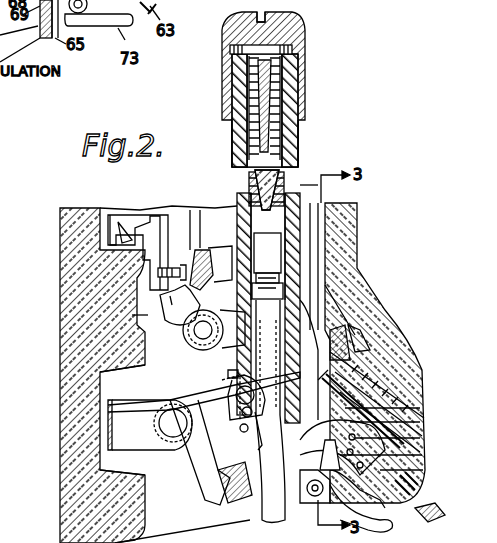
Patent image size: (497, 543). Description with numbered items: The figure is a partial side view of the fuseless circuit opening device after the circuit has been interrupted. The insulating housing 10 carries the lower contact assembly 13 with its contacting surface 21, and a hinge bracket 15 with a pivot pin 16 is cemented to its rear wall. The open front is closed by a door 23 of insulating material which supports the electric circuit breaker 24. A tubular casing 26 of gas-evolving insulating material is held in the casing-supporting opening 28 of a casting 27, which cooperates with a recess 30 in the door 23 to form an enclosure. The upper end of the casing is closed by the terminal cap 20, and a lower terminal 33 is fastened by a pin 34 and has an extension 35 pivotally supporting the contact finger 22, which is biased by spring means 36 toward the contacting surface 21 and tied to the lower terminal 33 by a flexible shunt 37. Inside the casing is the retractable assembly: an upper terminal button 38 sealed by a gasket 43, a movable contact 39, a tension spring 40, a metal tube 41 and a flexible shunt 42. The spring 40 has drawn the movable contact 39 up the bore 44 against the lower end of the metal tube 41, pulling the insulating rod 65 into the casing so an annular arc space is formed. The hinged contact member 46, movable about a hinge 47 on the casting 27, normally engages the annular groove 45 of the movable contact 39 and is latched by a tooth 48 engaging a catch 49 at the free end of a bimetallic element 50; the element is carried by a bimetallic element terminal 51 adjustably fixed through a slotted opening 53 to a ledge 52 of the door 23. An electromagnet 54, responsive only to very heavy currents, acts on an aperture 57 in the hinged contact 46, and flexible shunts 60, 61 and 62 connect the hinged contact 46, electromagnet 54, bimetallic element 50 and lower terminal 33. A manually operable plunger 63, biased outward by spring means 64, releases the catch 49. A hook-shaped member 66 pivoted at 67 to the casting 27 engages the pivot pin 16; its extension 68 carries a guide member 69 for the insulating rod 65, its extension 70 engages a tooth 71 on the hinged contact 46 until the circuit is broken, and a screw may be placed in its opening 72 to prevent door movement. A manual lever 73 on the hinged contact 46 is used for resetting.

The housing 10 is at (60, 243).
The lower contact assembly 13 is at (154, 306).
The hinge bracket 15 is at (160, 445).
The pivot pin 16 is at (178, 432).
The terminal cap 20 is at (305, 64).
The contacting surface 21 is at (178, 214).
The contact finger 22 is at (195, 310).
The door 23 is at (360, 220).
The electric circuit breaker 24 is at (309, 177).
The tubular casing 26 is at (300, 145).
The casting 27 is at (338, 344).
The casing-supporting opening 28 is at (324, 355).
The recess 30 is at (400, 395).
The lower terminal 33 is at (322, 292).
The pin 34 is at (228, 350).
The extension 35 is at (190, 348).
The spring means 36 is at (205, 296).
The flexible shunt 37 is at (207, 250).
The upper terminal button 38 is at (300, 22).
The movable contact 39 is at (267, 266).
The tension spring 40 is at (248, 166).
The metal tube 41 is at (281, 126).
The flexible shunt 42 is at (287, 178).
The gasket 43 is at (292, 50).
The bore 44 is at (302, 260).
The annular groove 45 is at (232, 246).
The hinged contact member 46 is at (266, 375).
The hinge 47 is at (306, 488).
The tooth 48 is at (423, 455).
The catch 49 is at (422, 438).
The bimetallic element 50 is at (420, 372).
The bimetallic element terminal 51 is at (375, 345).
The ledge 52 is at (392, 352).
The slotted opening 53 is at (400, 360).
The electromagnet 54 is at (422, 408).
The aperture 57 is at (385, 510).
The flexible shunt 60 is at (385, 530).
The flexible shunt 61 is at (422, 422).
The flexible shunt 62 is at (360, 340).
The manually operable plunger 63 is at (425, 502).
The spring means 64 is at (423, 472).
The insulating rod 65 is at (284, 519).
The hook-shaped member 66 is at (204, 407).
The pivot 67 is at (232, 392).
The extension 68 is at (218, 478).
The guide member 69 is at (228, 500).
The extension 70 is at (262, 452).
The tooth 71 is at (342, 445).
The opening 72 is at (244, 435).
The manual lever 73 is at (428, 524).